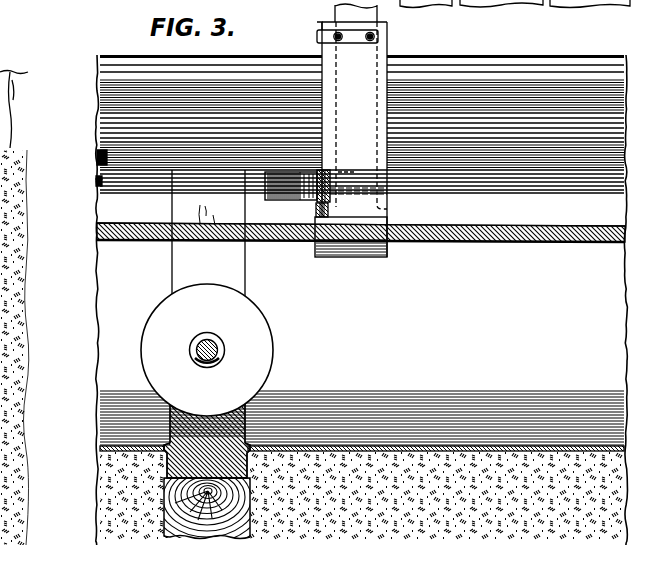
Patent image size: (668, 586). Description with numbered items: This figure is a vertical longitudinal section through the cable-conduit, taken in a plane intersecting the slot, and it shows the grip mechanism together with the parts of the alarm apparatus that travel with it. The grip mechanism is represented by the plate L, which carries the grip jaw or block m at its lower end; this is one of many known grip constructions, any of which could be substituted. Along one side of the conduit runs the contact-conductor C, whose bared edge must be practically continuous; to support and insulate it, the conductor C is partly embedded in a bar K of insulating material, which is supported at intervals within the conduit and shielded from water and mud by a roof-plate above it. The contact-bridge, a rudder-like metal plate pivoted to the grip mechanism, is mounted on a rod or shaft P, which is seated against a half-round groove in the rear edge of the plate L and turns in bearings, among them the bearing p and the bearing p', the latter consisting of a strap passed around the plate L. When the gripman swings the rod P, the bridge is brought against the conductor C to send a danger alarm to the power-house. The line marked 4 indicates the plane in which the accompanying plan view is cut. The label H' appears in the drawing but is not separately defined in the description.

The rod P is at (321, 27).
The bearing p' is at (354, 49).
The plate L is at (354, 130).
The section line 4 is at (95, 172).
The bar of insulating material K is at (97, 160).
The contact-conductor C is at (96, 181).
The hub block H' is at (254, 270).
The bearing p is at (335, 215).
The grip jaw or block m is at (351, 245).